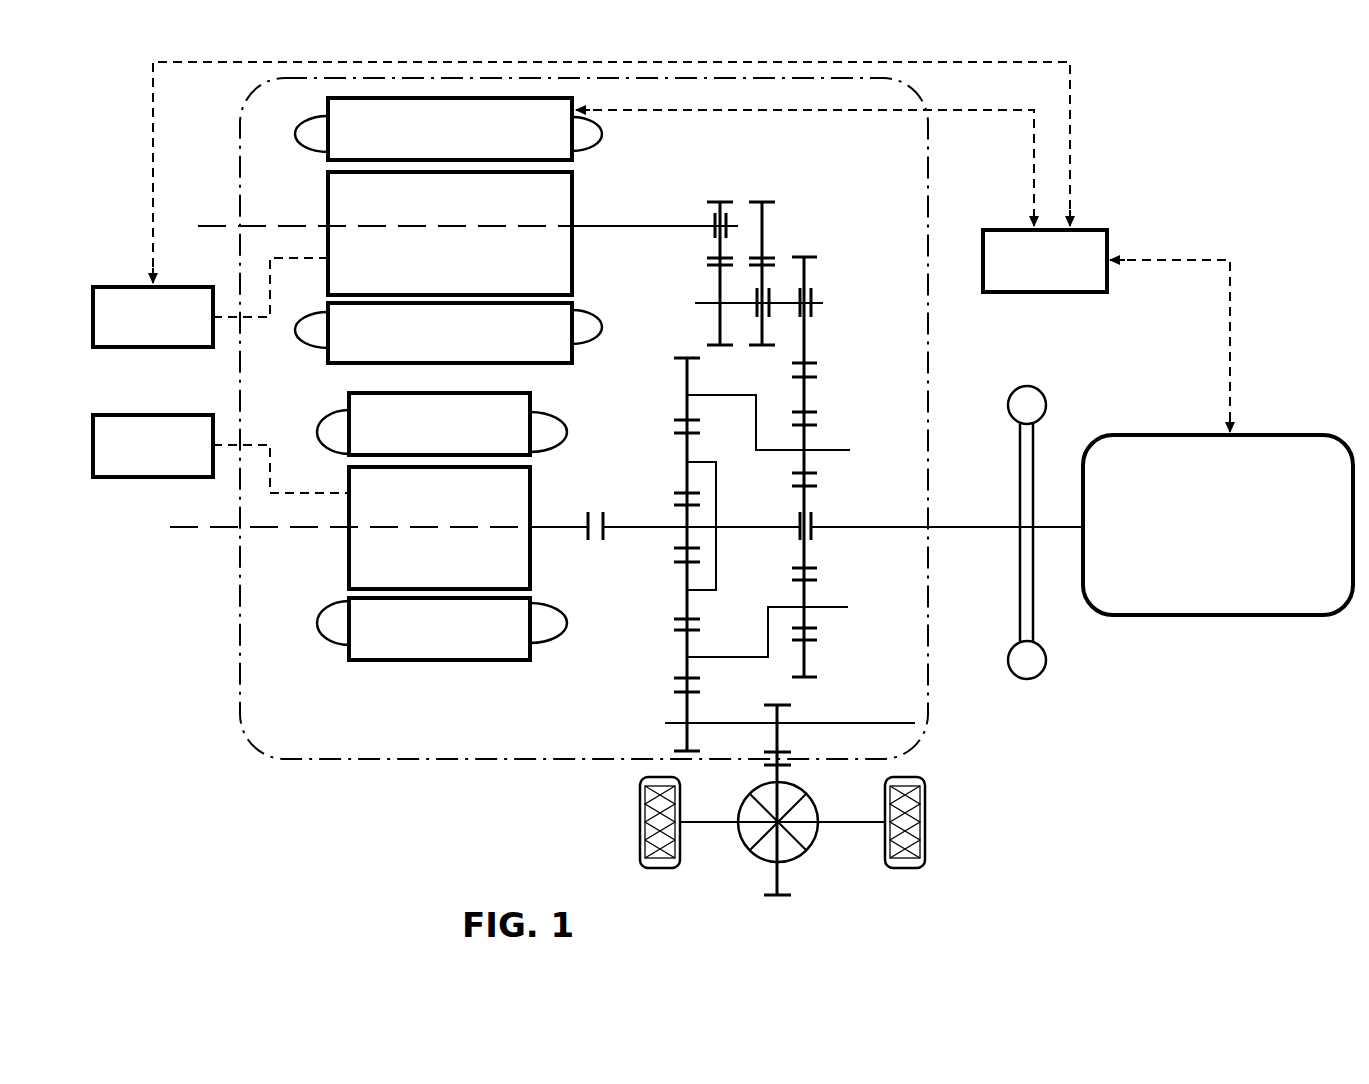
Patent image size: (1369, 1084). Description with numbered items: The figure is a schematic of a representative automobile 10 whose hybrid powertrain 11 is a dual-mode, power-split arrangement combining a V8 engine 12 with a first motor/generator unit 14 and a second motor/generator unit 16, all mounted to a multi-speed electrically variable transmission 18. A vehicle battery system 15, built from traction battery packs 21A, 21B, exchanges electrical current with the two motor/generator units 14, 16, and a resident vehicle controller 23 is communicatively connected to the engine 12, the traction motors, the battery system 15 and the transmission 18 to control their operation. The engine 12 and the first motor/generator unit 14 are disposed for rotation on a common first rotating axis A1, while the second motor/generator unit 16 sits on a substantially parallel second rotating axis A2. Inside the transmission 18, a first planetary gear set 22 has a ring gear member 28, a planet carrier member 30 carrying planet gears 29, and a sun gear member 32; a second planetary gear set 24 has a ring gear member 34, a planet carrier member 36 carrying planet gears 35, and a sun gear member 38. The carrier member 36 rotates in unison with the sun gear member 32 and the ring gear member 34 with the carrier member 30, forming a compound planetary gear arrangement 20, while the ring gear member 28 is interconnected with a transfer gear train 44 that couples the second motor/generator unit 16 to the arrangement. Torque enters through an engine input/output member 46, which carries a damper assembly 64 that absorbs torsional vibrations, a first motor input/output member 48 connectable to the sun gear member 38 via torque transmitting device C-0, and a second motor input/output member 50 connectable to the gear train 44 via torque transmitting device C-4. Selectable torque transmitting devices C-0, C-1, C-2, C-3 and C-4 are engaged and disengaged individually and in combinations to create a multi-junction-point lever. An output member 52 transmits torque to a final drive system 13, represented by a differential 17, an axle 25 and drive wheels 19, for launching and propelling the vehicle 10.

The automobile 10 is at (1198, 176).
The powertrain 11 is at (1262, 288).
The engine 12 is at (1152, 445).
The final drive system 13 is at (985, 778).
The first motor/generator unit 14 is at (348, 567).
The vehicle battery system 15 is at (127, 212).
The second motor/generator unit 16 is at (328, 195).
The differential 17 is at (795, 860).
The electrically variable transmission 18 is at (874, 605).
The drive wheels 19 is at (653, 868).
The compound planetary gear arrangement 20 is at (895, 396).
The traction battery pack 21A is at (155, 415).
The traction battery pack 21B is at (150, 287).
The first planetary gear set 22 is at (828, 350).
The vehicle controller 23 is at (1012, 250).
The second planetary gear set 24 is at (653, 658).
The axle 25 is at (707, 825).
The ring gear member 28 is at (810, 412).
The planet gear 29 is at (812, 628).
The planet carrier member 30 is at (815, 450).
The sun gear member 32 is at (812, 488).
The ring gear member 34 is at (685, 420).
The planet gear 35 is at (685, 619).
The planet carrier member 36 is at (717, 467).
The sun gear member 38 is at (685, 507).
The gear train 44 is at (814, 218).
The engine input/output member 46 is at (958, 526).
The first motor input/output member 48 is at (610, 541).
The second motor input/output member 50 is at (653, 222).
The output member 52 is at (680, 724).
The damper assembly 64 is at (1020, 392).
The first rotating axis A1 is at (222, 530).
The second rotating axis A2 is at (230, 228).
The torque transmitting device C-0 is at (571, 536).
The torque transmitting device C-1 is at (833, 536).
The torque transmitting device C-2 is at (829, 294).
The torque transmitting device C-3 is at (760, 334).
The torque transmitting device C-4 is at (693, 234).